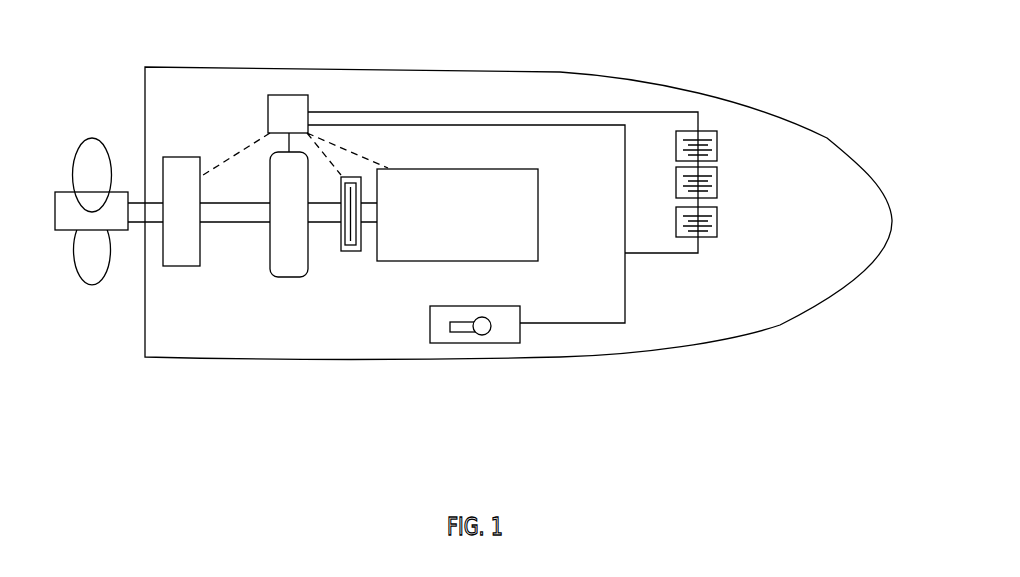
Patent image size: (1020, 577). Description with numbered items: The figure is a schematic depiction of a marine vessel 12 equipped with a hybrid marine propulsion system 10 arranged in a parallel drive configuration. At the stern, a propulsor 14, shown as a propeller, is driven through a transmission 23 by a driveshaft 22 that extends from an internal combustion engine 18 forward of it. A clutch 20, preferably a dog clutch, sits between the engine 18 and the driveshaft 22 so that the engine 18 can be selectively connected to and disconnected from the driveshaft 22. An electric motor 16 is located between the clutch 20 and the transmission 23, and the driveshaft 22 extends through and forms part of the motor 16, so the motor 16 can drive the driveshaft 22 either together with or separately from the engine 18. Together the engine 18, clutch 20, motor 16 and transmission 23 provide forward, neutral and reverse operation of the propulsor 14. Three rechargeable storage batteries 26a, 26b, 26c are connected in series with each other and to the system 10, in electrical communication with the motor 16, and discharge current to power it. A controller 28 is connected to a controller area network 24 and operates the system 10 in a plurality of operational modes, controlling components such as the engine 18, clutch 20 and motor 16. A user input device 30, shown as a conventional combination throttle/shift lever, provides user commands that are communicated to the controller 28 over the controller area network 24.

The hybrid marine propulsion system 10 is at (585, 338).
The marine vessel 12 is at (798, 98).
The propulsor 14 is at (65, 223).
The electric motor 16 is at (290, 265).
The internal combustion engine 18 is at (388, 247).
The clutch 20 is at (338, 238).
The driveshaft 22 is at (226, 215).
The transmission 23 is at (175, 252).
The controller area network 24 is at (486, 113).
The rechargeable storage battery 26a is at (717, 140).
The rechargeable storage battery 26b is at (717, 178).
The rechargeable storage battery 26c is at (717, 225).
The controller 28 is at (285, 108).
The user input device 30 is at (503, 335).